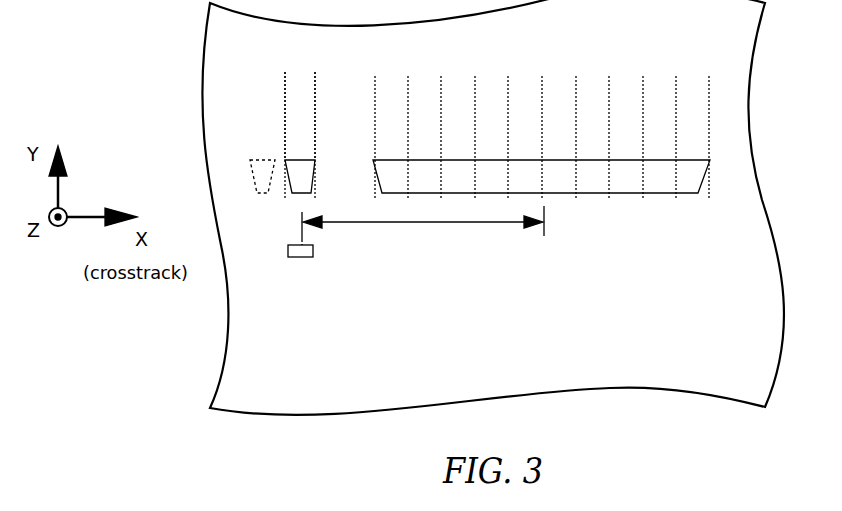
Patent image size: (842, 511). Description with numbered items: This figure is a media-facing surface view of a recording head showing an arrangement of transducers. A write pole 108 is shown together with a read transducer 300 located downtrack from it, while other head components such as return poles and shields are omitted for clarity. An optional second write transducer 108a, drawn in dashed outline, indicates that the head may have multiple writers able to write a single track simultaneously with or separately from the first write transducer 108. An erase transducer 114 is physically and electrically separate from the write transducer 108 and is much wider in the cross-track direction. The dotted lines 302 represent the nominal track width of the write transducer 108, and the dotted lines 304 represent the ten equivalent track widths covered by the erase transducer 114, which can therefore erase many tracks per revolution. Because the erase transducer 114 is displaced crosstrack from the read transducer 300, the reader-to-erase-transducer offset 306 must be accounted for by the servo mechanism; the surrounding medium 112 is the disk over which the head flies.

The write pole 108 is at (311, 182).
The second write transducer 108a is at (258, 193).
The magnetic recording medium / substrate 112 is at (568, 375).
The erase transducer 114 is at (590, 185).
The read transducer 300 is at (300, 257).
The dotted lines 302 is at (285, 113).
The dotted lines 304 is at (478, 93).
The reader-to-erase-transducer offset 306 is at (415, 224).